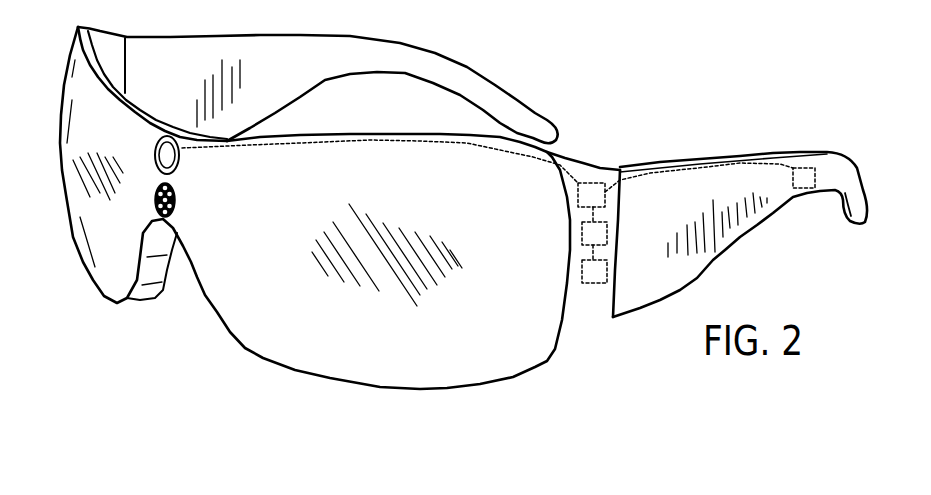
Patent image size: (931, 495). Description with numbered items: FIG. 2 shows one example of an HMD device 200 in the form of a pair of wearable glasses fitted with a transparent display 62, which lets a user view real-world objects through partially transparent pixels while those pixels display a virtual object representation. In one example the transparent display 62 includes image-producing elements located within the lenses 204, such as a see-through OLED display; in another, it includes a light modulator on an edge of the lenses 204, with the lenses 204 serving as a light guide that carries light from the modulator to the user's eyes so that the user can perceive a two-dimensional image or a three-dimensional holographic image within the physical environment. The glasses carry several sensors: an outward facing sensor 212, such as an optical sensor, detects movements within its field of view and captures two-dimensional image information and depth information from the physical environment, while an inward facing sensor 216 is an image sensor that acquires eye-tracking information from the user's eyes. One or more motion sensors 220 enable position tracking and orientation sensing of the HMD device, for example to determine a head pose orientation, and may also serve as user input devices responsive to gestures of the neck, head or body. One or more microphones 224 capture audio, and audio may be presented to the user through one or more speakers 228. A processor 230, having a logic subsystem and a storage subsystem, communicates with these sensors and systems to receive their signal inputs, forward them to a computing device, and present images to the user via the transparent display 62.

The HMD device 200 is at (457, 218).
The lenses 204 is at (103, 273).
The transparent display 62 is at (255, 320).
The outward facing sensor 212 is at (188, 151).
The inward facing sensor 216 is at (186, 198).
The motion sensors 220 is at (592, 183).
The microphones 224 is at (607, 223).
The processor 230 is at (607, 262).
The speakers 228 is at (807, 168).